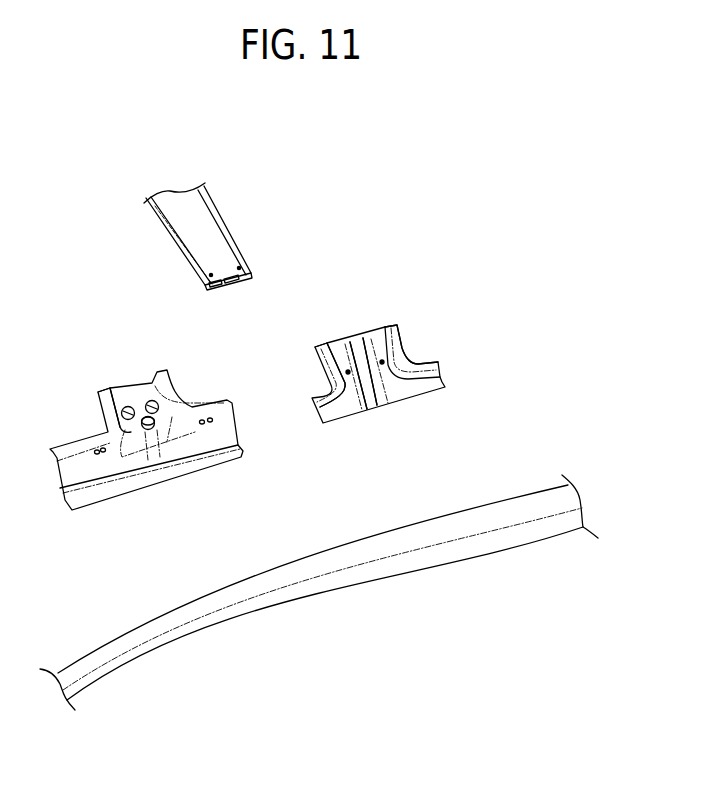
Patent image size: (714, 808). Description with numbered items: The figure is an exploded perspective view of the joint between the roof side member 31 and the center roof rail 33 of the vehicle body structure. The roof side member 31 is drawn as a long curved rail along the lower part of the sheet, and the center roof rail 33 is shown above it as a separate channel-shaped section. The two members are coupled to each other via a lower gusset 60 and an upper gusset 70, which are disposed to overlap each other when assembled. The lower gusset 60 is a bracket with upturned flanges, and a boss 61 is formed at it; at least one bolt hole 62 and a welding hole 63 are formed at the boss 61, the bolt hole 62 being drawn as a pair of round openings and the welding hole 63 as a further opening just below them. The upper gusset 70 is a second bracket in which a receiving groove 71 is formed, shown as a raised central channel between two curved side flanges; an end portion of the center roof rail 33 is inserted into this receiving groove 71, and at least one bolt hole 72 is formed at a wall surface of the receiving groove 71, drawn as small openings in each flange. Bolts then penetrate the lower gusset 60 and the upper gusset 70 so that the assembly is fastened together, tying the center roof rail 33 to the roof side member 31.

The roof side member 31 is at (312, 587).
The center roof rail 33 is at (211, 237).
The lower gusset 60 is at (200, 408).
The boss 61 is at (115, 397).
The bolt hole 62 is at (150, 401).
The welding hole 63 is at (149, 430).
The upper gusset 70 is at (447, 361).
The receiving groove 71 is at (358, 352).
The bolt hole 72 is at (348, 370).